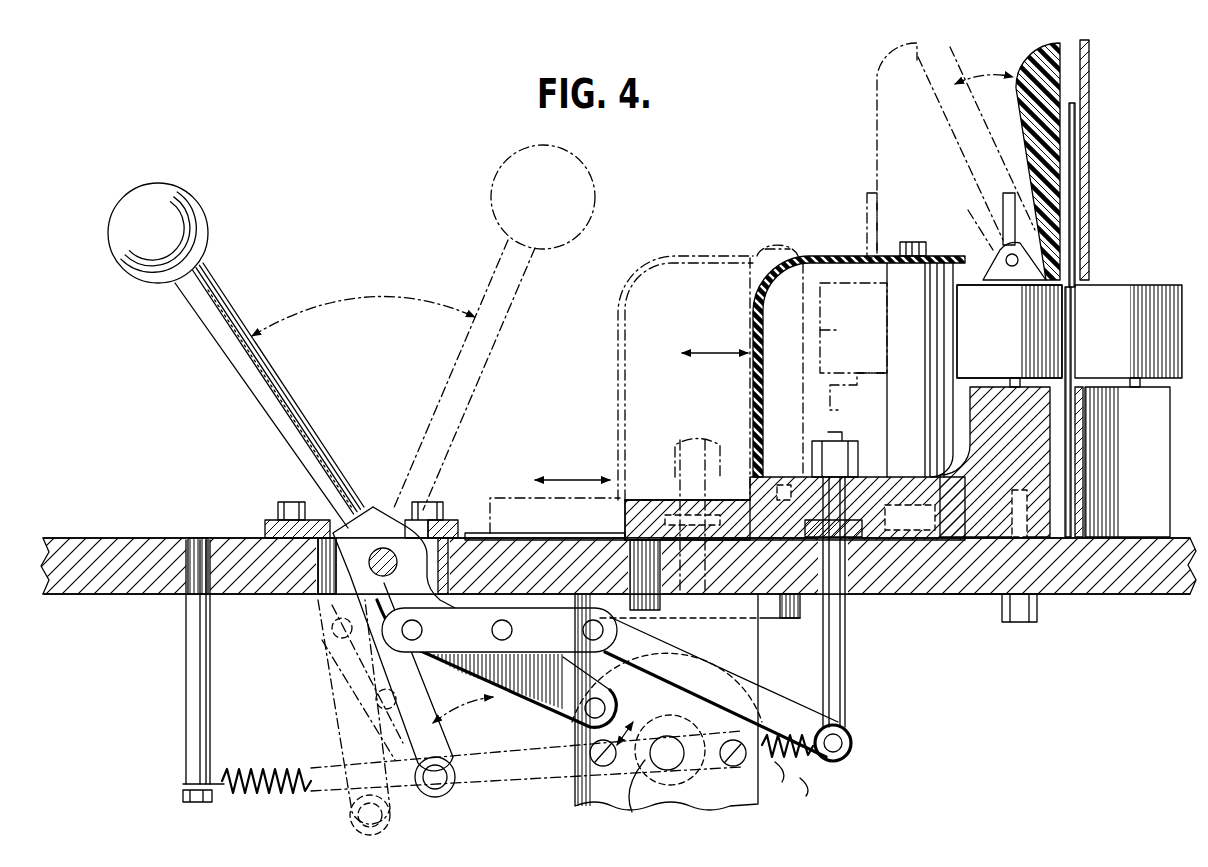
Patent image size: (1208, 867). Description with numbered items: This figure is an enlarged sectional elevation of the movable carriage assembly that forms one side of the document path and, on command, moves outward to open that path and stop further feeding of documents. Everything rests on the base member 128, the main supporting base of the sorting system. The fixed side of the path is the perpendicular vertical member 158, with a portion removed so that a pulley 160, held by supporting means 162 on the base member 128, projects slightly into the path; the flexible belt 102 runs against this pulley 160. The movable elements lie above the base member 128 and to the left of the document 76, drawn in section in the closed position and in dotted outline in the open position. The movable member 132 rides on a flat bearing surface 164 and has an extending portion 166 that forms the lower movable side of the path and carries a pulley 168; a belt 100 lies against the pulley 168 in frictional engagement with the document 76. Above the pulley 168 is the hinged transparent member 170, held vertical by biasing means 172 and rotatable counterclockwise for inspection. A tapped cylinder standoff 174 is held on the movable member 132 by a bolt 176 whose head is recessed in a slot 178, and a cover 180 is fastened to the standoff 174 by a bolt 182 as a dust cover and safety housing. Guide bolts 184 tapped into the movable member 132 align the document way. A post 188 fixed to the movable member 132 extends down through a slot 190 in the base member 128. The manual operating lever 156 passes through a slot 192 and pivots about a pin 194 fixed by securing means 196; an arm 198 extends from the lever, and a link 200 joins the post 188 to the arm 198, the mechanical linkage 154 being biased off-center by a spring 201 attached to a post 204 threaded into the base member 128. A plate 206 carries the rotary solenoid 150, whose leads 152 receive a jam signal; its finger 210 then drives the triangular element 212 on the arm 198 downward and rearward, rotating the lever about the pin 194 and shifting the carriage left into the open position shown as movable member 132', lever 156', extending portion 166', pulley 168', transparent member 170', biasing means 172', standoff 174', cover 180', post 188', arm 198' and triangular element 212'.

The document 76 is at (1075, 143).
The belt 100 is at (1040, 318).
The flexible belt 102 is at (1071, 300).
The base member 128 is at (106, 538).
The movable member 132 is at (687, 481).
The movable member in open position 132' is at (555, 488).
The rotary solenoid 150 is at (562, 767).
The electrical output leads 152 is at (795, 780).
The mechanical linkage 154 is at (548, 785).
The manual operating lever 156 is at (236, 355).
The operating lever in open position 156' is at (494, 327).
The perpendicular vertical member 158 is at (1089, 80).
The pulley 160 is at (1138, 292).
The supporting means 162 is at (1160, 468).
The bearing surface 164 is at (572, 533).
The extending portion 166 is at (1031, 462).
The extending portion in open position 166' is at (827, 397).
The pulley 168 is at (1009, 331).
The pulley in open position 168' is at (804, 333).
The transparent member 170 is at (1020, 158).
The transparent member in open position 170' is at (925, 146).
The biasing means 172 is at (982, 233).
The biasing means in open position 172' is at (903, 212).
The tapped cylinder standoff 174 is at (845, 370).
The standoff in open position 174' is at (687, 379).
The bolt 176 is at (876, 455).
The slot 178 is at (965, 585).
The cover 180 is at (859, 342).
The cover in open position 180' is at (708, 353).
The bolt 182 is at (916, 252).
The guide bolts 184 is at (790, 618).
The post 188 is at (856, 602).
The post in open position 188' is at (697, 487).
The slot 190 is at (658, 590).
The slot 192 is at (330, 592).
The pin 194 is at (383, 548).
The securing means 196 is at (268, 520).
The arm 198 is at (499, 658).
The arm in open position 198' is at (343, 682).
The link 200 is at (790, 725).
The spring 201 is at (272, 792).
The post 204 is at (188, 656).
The plate 206 is at (740, 808).
The finger 210 is at (650, 790).
The triangular element 212 is at (496, 673).
The triangular element in open position 212' is at (337, 717).